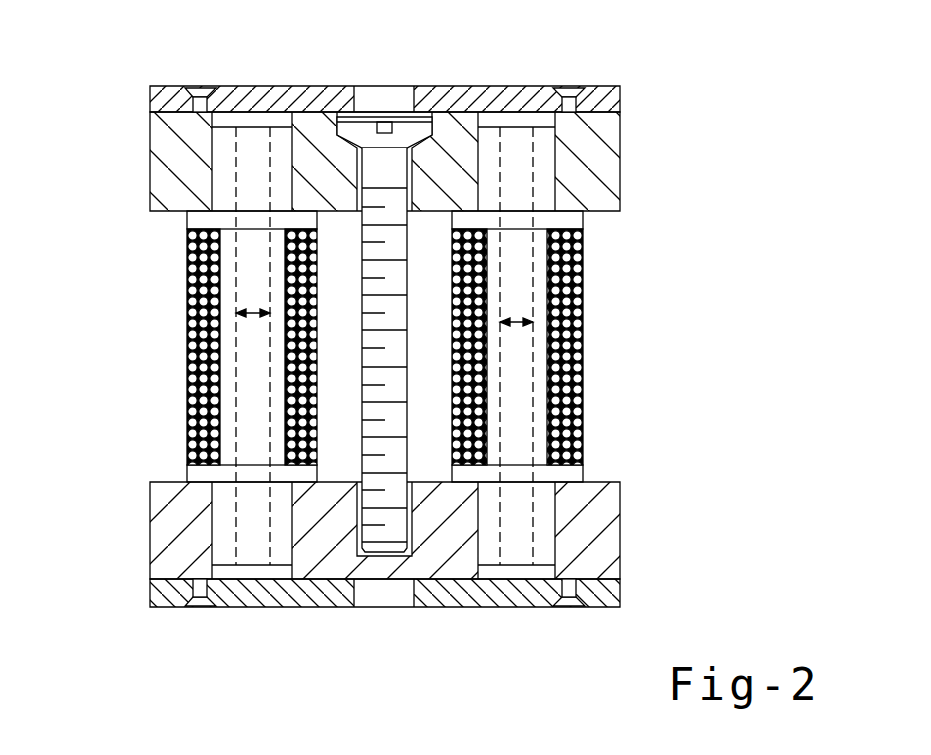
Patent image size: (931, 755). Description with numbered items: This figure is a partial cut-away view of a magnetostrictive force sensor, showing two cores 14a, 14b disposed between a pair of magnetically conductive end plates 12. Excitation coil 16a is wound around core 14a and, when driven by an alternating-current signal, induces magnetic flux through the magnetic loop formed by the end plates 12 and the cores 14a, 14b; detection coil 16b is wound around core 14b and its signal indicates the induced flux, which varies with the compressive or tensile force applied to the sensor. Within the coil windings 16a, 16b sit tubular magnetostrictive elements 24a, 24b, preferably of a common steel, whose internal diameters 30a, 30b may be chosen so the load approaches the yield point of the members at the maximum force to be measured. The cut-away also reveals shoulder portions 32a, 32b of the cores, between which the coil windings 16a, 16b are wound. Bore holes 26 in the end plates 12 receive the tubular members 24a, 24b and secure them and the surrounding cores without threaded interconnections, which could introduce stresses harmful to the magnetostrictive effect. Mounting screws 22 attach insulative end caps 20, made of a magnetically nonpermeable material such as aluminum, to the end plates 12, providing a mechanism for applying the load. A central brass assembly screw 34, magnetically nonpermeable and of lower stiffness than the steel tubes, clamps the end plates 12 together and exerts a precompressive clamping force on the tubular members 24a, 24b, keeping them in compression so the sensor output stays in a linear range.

The end plate 12 is at (620, 142).
The insulative end cap 20 is at (620, 100).
The mounting screw 22 is at (199, 86).
The bore hole 26 is at (212, 158).
The assembly screw 34 is at (365, 128).
The core 14a is at (185, 346).
The core 14b is at (602, 346).
The excitation coil 16a is at (185, 363).
The detection coil 16b is at (583, 355).
The magnetostrictive element 24a is at (225, 332).
The magnetostrictive element 24b is at (545, 270).
The internal diameter 30a is at (236, 313).
The internal diameter 30b is at (533, 322).
The shoulder portion 32a is at (187, 213).
The shoulder portion 32b is at (583, 222).